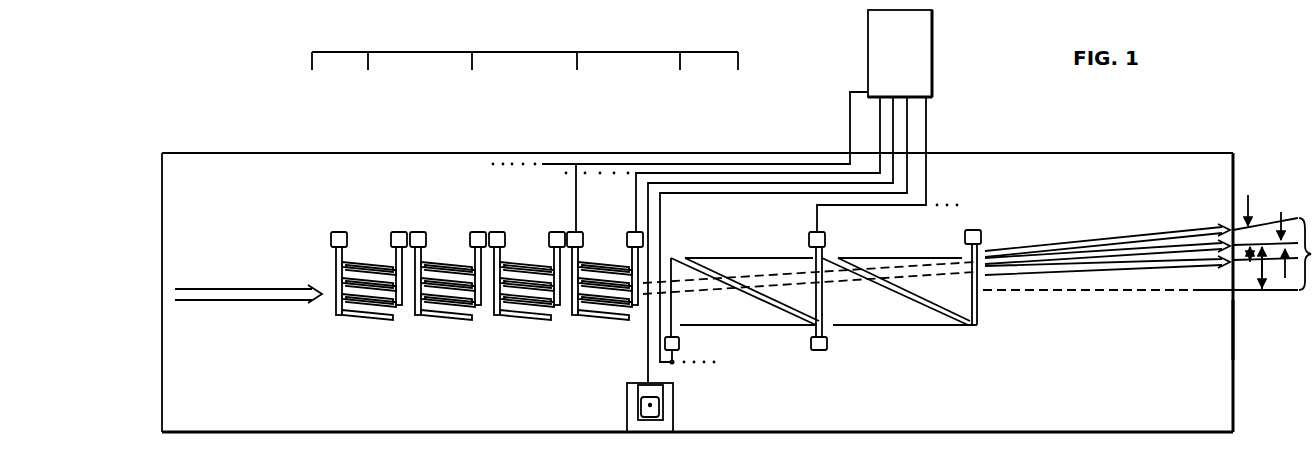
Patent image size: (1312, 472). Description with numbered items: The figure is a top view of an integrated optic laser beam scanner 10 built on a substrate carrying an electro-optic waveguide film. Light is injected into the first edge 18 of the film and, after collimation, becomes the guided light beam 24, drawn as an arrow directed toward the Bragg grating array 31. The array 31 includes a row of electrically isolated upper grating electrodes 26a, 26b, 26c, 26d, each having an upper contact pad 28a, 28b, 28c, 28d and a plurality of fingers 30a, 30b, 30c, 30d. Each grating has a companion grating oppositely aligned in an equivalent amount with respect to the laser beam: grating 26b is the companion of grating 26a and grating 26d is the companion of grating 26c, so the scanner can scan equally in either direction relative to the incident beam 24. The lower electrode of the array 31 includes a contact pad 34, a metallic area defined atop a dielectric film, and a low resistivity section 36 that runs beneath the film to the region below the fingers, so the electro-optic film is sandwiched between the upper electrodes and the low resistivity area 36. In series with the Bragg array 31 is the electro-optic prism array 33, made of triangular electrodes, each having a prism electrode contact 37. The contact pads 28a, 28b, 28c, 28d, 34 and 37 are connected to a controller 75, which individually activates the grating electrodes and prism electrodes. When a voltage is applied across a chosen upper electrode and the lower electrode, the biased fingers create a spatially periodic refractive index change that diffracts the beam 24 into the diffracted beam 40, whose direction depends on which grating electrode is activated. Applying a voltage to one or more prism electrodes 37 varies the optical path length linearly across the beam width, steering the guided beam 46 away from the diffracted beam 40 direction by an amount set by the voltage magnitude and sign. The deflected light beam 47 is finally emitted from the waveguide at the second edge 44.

The integrated optic beam scanner 10 is at (681, 272).
The first edge 18 is at (162, 342).
The guided light beam 24 is at (234, 292).
The upper grating electrode 26a is at (374, 198).
The upper grating electrode 26b is at (469, 198).
The upper grating electrode 26c is at (559, 198).
The upper grating electrode 26d is at (651, 198).
The upper contact pad 28a is at (387, 102).
The upper contact pad 28b is at (490, 102).
The upper contact pad 28c is at (593, 102).
The upper contact pad 28d is at (696, 102).
The fingers 30a is at (388, 120).
The fingers 30b is at (491, 120).
The fingers 30c is at (594, 120).
The fingers 30d is at (697, 120).
The Bragg grating array 31 is at (526, 52).
The prism array 33 is at (916, 269).
The contact pad 34 is at (650, 405).
The low resistivity section 36 is at (650, 407).
The prism electrode 37 is at (977, 232).
The diffracted beam 40 is at (970, 263).
The second edge 44 is at (1233, 373).
The deflected guided beam 46 is at (1156, 241).
The deflected light beam 47 is at (1272, 252).
The controller 75 is at (928, 39).